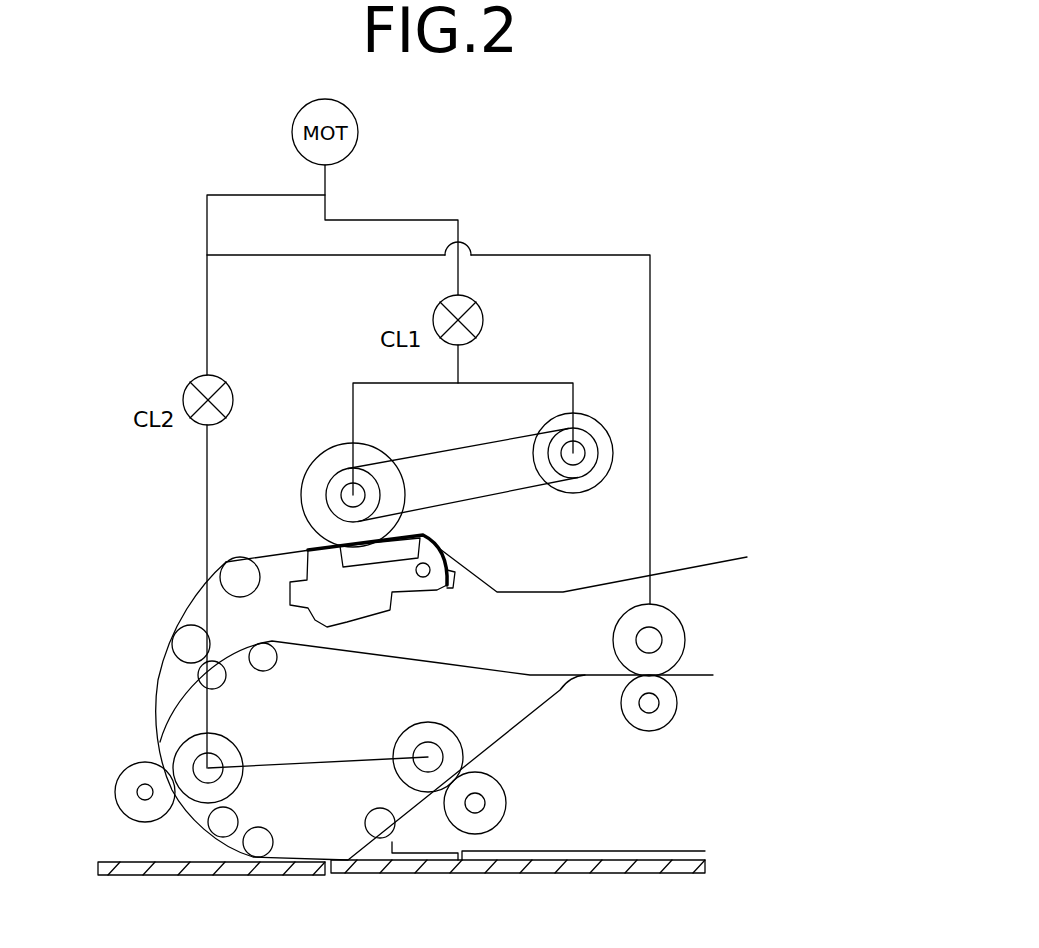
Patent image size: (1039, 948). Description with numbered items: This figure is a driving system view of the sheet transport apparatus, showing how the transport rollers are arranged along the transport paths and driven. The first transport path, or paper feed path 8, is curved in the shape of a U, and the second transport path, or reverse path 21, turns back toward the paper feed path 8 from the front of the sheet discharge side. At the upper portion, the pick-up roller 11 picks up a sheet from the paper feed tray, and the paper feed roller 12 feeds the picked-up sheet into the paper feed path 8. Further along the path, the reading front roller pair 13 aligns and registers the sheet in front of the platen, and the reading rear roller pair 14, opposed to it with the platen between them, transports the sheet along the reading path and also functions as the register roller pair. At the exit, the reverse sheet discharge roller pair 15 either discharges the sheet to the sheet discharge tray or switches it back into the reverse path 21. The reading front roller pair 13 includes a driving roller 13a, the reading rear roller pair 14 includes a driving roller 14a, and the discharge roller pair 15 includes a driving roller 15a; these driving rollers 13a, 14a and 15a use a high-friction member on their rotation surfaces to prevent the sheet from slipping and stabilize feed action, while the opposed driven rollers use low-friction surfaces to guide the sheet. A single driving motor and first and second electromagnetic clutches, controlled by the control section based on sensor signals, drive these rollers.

The first transport path (paper feed path) 8 is at (423, 704).
The pick-up roller 11 is at (590, 420).
The paper feed roller 12 is at (322, 452).
The reading front roller pair 13 is at (246, 746).
The driving roller 13a is at (232, 782).
The reading rear roller pair (register roller pair) 14 is at (428, 730).
The driving roller 14a is at (437, 733).
The reverse sheet discharge roller pair 15 is at (700, 655).
The driving roller 15a is at (668, 622).
The second transport path (reverse path) 21 is at (438, 661).